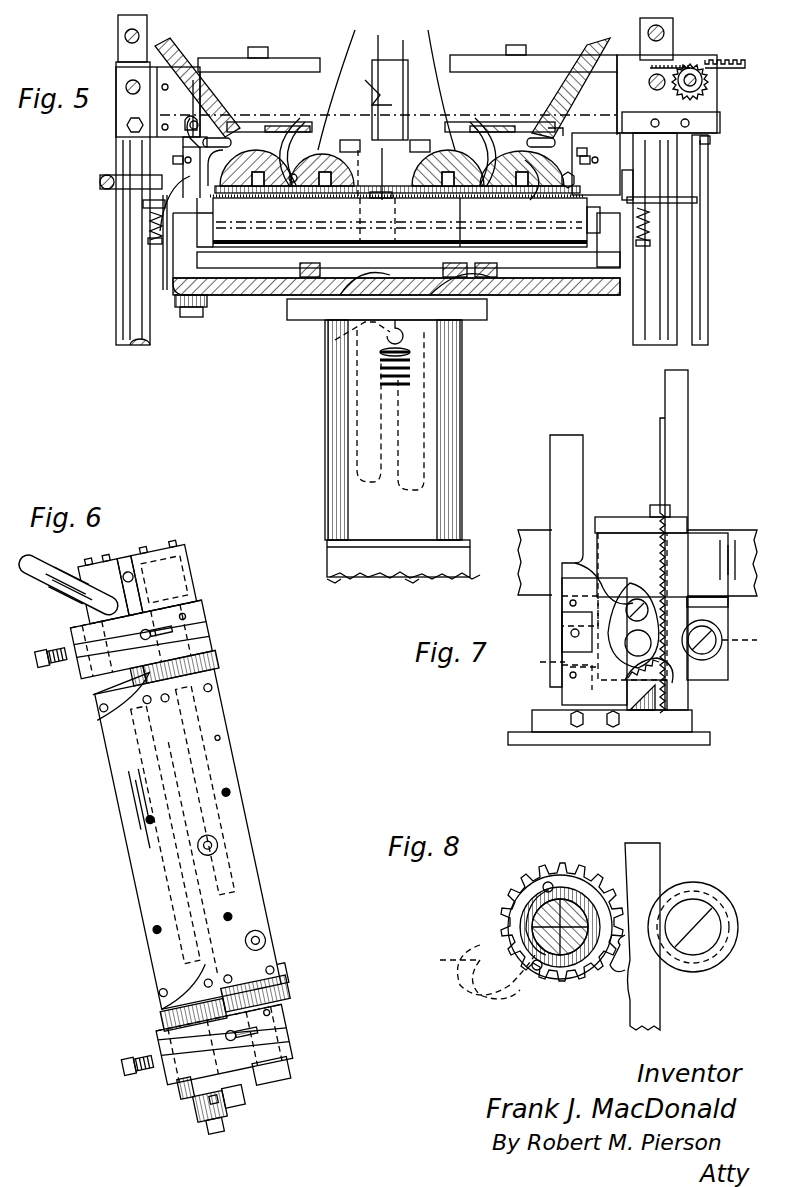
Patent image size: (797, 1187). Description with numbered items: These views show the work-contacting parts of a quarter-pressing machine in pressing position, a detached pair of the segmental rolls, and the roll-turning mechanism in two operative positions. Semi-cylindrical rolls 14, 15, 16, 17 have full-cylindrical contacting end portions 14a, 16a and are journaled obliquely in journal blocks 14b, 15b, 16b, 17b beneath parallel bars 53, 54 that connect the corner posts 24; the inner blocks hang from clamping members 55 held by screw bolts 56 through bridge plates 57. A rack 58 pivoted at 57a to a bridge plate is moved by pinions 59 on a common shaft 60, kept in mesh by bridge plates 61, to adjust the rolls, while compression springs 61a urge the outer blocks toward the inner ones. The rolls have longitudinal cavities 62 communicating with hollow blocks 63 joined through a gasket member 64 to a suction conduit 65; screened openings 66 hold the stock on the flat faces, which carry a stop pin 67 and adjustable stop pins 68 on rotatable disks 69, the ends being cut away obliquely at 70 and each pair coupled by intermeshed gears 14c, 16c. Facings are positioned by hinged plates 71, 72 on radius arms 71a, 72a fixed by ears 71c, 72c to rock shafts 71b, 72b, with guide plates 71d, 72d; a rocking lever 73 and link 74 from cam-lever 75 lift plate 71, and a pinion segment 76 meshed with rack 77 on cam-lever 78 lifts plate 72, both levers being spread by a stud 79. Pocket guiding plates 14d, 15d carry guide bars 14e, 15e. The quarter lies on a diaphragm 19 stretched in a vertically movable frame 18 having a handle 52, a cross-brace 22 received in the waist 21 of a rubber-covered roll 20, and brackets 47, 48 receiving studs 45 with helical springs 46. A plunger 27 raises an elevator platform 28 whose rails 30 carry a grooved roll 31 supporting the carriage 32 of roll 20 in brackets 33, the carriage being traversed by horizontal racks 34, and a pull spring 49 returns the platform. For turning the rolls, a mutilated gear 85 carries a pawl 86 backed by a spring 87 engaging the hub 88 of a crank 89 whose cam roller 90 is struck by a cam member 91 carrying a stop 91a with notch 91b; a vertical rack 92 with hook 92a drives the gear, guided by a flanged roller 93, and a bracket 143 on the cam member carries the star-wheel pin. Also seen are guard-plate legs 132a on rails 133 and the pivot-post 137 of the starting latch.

In FIG. 5, the semi-cylindrical roll 14 is at (369, 175).
In FIG. 6, the semi-cylindrical roll 14 is at (215, 698).
In FIG. 6, the full-cylindrical end portion 14a is at (218, 660).
In FIG. 5, the journal block 14b is at (280, 152).
In FIG. 6, the journal block 14b is at (190, 612).
In FIG. 7, the journal block 14b is at (720, 675).
In FIG. 6, the gear 14c is at (300, 995).
In FIG. 5, the pocket supporting and guiding plate 14d is at (345, 78).
In FIG. 5, the guide bar 14e is at (360, 144).
In FIG. 5, the semi-cylindrical roll 15 is at (392, 171).
In FIG. 5, the journal block 15b is at (482, 152).
In FIG. 5, the pocket supporting and guiding plate 15d is at (436, 78).
In FIG. 5, the guide bar 15e is at (401, 135).
In FIG. 5, the semi-cylindrical roll 16 is at (264, 222).
In FIG. 6, the semi-cylindrical roll 16 is at (112, 738).
In FIG. 6, the full-cylindrical end portion 16a is at (95, 688).
In FIG. 5, the journal block 16b is at (162, 240).
In FIG. 6, the journal block 16b is at (75, 628).
In FIG. 7, the journal block 16b is at (554, 660).
In FIG. 6, the gear 16c is at (165, 1030).
In FIG. 5, the semi-cylindrical roll 17 is at (552, 180).
In FIG. 5, the journal block 17b is at (588, 153).
In FIG. 5, the vertically movable frame 18 is at (630, 170).
In FIG. 5, the flexible sheet or diaphragm 19 is at (576, 180).
In FIG. 5, the roll 20 is at (474, 222).
In FIG. 5, the waist 21 is at (310, 297).
In FIG. 5, the cross-brace 22 is at (382, 192).
In FIG. 5, the corner post 24 is at (125, 275).
In FIG. 5, the plunger 27 is at (450, 425).
In FIG. 5, the elevator platform 28 is at (200, 318).
In FIG. 7, the elevator platform 28 is at (665, 740).
In FIG. 5, the run-way or rail 30 is at (275, 297).
In FIG. 5, the roll 31 is at (555, 297).
In FIG. 5, the carriage 32 is at (585, 297).
In FIG. 5, the bracket 33 is at (610, 238).
In FIG. 5, the horizontal rack 34 is at (350, 290).
In FIG. 5, the stud or dowel 45 is at (150, 220).
In FIG. 5, the helical spring 46 is at (150, 236).
In FIG. 5, the ear or bracket 47 is at (145, 204).
In FIG. 5, the ear or bracket 48 is at (697, 200).
In FIG. 5, the pull spring 49 is at (410, 372).
In FIG. 5, the handle 52 is at (125, 180).
In FIG. 7, the bar 53 is at (712, 540).
In FIG. 5, the bar 54 is at (390, 91).
In FIG. 5, the clamping member 55 is at (312, 140).
In FIG. 6, the clamping member 55 is at (180, 636).
In FIG. 7, the clamping member 55 is at (715, 602).
In FIG. 5, the screw bolt 56 is at (257, 47).
In FIG. 7, the screw bolt 56 is at (657, 505).
In FIG. 5, the bridge plate 57 is at (275, 62).
In FIG. 7, the bridge plate 57 is at (620, 520).
In FIG. 5, the pivot 57a is at (625, 60).
In FIG. 5, the rack 58 is at (740, 60).
In FIG. 5, the pinion 59 is at (705, 80).
In FIG. 5, the common shaft 60 is at (690, 66).
In FIG. 5, the bridge plate 61 is at (173, 160).
In FIG. 6, the bridge plate 61 is at (48, 657).
In FIG. 6, the compression spring 61a is at (65, 670).
In FIG. 5, the longitudinal cavity 62 is at (258, 190).
In FIG. 6, the longitudinal cavity 62 is at (225, 750).
In FIG. 6, the hollow block 63 is at (110, 582).
In FIG. 6, the yielding washer or gasket member 64 is at (132, 572).
In FIG. 6, the fluid conduit 65 is at (78, 580).
In FIG. 6, the screened opening 66 is at (230, 790).
In FIG. 6, the guide or stop pin 67 is at (220, 740).
In FIG. 6, the adjustable stop pin 68 is at (220, 840).
In FIG. 6, the rotatable disk 69 is at (216, 850).
In FIG. 6, the oblique cut-away 70 is at (100, 725).
In FIG. 5, the hinged plate 71 is at (300, 118).
In FIG. 5, the radius arm 71a is at (243, 122).
In FIG. 5, the rock shaft 71b is at (216, 138).
In FIG. 5, the ear 71c is at (212, 128).
In FIG. 5, the guide-plate 71d is at (163, 45).
In FIG. 5, the hinged plate 72 is at (478, 118).
In FIG. 5, the radius arm 72a is at (510, 122).
In FIG. 5, the rock shaft 72b is at (540, 138).
In FIG. 5, the ear 72c is at (560, 130).
In FIG. 5, the guide-plate 72d is at (600, 42).
In FIG. 5, the rocking lever 73 is at (185, 125).
In FIG. 5, the link 74 is at (293, 174).
In FIG. 5, the cam-lever 75 is at (332, 600).
In FIG. 5, the pinion segment 76 is at (718, 127).
In FIG. 5, the rack 77 is at (400, 120).
In FIG. 5, the cam-lever 78 is at (420, 596).
In FIG. 5, the stud 79 is at (340, 360).
In FIG. 6, the mutilated gear 85 is at (172, 1090).
In FIG. 7, the mutilated gear 85 is at (650, 690).
In FIG. 8, the mutilated gear 85 is at (570, 865).
In FIG. 8, the pawl 86 is at (530, 945).
In FIG. 6, the spring 87 is at (190, 1105).
In FIG. 8, the spring 87 is at (525, 910).
In FIG. 6, the hub 88 is at (230, 1110).
In FIG. 8, the hub 88 is at (575, 890).
In FIG. 6, the crank 89 is at (198, 1115).
In FIG. 7, the crank 89 is at (640, 585).
In FIG. 8, the crank 89 is at (510, 1000).
In FIG. 7, the cam roller 90 is at (600, 600).
In FIG. 8, the cam roller 90 is at (457, 974).
In FIG. 7, the cam member 91 is at (585, 695).
In FIG. 7, the stop 91a is at (552, 472).
In FIG. 7, the notch 91b is at (575, 560).
In FIG. 6, the vertical rack 92 is at (245, 1095).
In FIG. 7, the vertical rack 92 is at (680, 456).
In FIG. 8, the vertical rack 92 is at (650, 1003).
In FIG. 7, the hook 92a is at (660, 418).
In FIG. 8, the hook 92a is at (632, 975).
In FIG. 6, the flanged guide-roller 93 is at (285, 1065).
In FIG. 7, the flanged guide-roller 93 is at (727, 640).
In FIG. 8, the flanged guide-roller 93 is at (705, 895).
In FIG. 5, the leg 132a is at (120, 22).
In FIG. 5, the rail 133 is at (125, 37).
In FIG. 5, the vertical pivot-post 137 is at (708, 300).
In FIG. 7, the bracket 143 is at (575, 630).